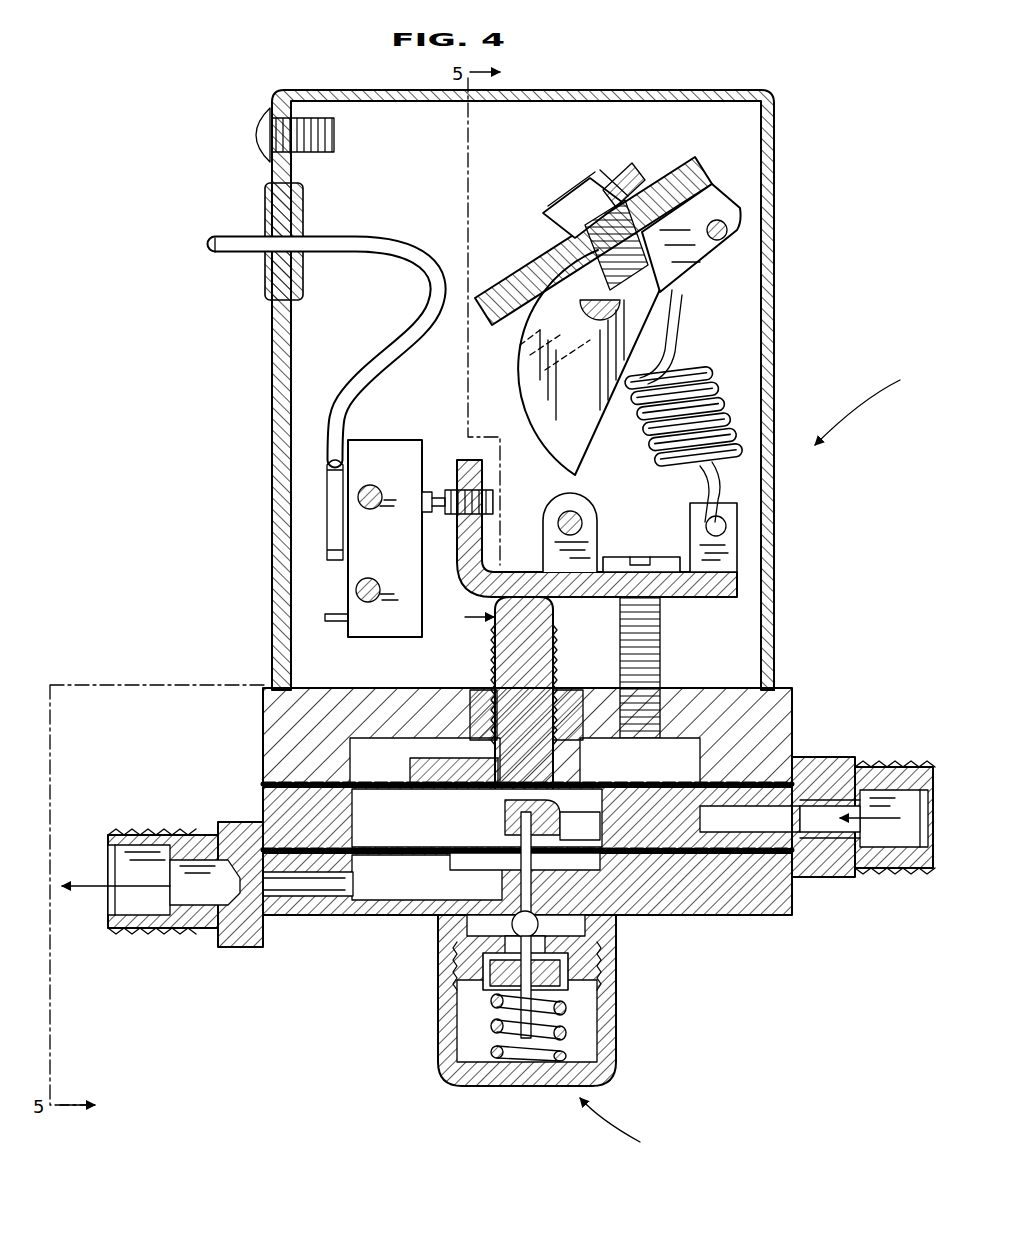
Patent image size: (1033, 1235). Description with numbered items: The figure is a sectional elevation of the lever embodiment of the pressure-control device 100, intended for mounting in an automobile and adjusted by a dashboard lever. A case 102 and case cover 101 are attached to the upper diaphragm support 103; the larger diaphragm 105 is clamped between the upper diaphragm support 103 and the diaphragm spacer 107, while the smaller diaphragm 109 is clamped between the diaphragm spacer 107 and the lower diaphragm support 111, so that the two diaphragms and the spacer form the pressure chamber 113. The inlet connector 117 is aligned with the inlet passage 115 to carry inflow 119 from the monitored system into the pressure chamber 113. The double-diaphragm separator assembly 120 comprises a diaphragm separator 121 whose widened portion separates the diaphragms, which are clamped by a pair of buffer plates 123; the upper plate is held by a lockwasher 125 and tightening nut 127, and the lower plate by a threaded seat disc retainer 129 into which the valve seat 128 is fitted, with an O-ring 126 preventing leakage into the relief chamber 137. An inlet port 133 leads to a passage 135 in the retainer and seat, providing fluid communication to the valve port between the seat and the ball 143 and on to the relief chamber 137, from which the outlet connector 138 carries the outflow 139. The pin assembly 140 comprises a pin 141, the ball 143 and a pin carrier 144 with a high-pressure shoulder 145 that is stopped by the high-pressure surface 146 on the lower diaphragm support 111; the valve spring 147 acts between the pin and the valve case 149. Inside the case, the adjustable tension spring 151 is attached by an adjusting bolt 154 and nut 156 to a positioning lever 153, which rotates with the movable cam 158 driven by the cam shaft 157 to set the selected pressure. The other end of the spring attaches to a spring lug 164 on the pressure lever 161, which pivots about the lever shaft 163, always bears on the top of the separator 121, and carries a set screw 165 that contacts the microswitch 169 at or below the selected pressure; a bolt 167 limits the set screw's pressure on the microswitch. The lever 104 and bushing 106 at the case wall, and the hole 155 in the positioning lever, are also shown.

The pressure control device 100 is at (861, 412).
The case cover 101 is at (775, 508).
The case 102 is at (272, 392).
The upper diaphragm support 103 is at (775, 720).
The lever 104 is at (305, 332).
The larger diaphragm 105 is at (812, 762).
The bushing 106 is at (268, 200).
The diaphragm spacer 107 is at (265, 798).
The smaller diaphragm 109 is at (815, 878).
The lower diaphragm support 111 is at (795, 903).
The pressure chamber 113 is at (405, 815).
The inlet passage 115 is at (715, 858).
The inlet connector 117 is at (900, 870).
The inflow 119 is at (880, 812).
The double-diaphragm separator assembly 120 is at (460, 616).
The diaphragm separator 121 is at (556, 622).
The buffer plates 123 is at (440, 755).
The lockwasher 125 is at (455, 756).
The O-ring 126 is at (470, 905).
The tightening nut 127 is at (577, 690).
The valve seat 128 is at (530, 905).
The seat disc retainer 129 is at (518, 838).
The inlet port 133 is at (568, 812).
The passage 135 is at (600, 826).
The relief chamber 137 is at (380, 890).
The outlet connector 138 is at (205, 935).
The outflow 139 is at (115, 857).
The pin assembly 140 is at (553, 1033).
The pin 141 is at (565, 1014).
The ball 143 is at (512, 926).
The pin carrier 144 is at (500, 990).
The high-pressure shoulder 145 is at (570, 955).
The high-pressure surface 146 is at (568, 968).
The valve spring 147 is at (492, 1032).
The valve case 149 is at (617, 1070).
The adjustable tension spring 151 is at (728, 385).
The positioning lever 153 is at (712, 194).
The adjusting bolt 154 is at (668, 320).
The bracket hole 155 is at (728, 232).
The nut 156 is at (556, 207).
The cam shaft 157 is at (600, 320).
The movable cam 158 is at (520, 410).
The pressure lever 161 is at (740, 595).
The lever shaft 163 is at (566, 512).
The spring lug 164 is at (738, 552).
The set screw 165 is at (480, 512).
The bolt 167 is at (640, 556).
The microswitch 169 is at (416, 438).